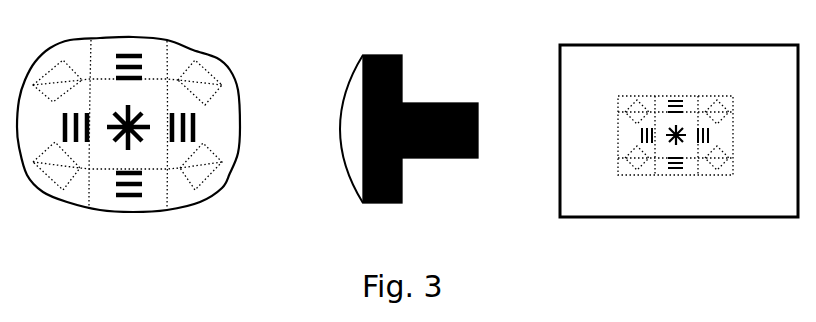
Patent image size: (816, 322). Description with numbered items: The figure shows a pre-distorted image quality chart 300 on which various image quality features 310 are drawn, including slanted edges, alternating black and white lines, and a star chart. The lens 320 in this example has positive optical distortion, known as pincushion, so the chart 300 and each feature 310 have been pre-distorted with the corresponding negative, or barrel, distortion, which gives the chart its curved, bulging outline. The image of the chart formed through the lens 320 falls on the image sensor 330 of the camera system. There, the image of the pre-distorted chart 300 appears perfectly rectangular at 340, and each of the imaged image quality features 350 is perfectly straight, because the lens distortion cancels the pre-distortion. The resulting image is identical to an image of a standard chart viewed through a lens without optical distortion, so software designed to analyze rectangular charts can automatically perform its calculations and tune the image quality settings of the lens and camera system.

The pre-distorted image quality chart 300 is at (128, 117).
The image quality features 310 is at (198, 175).
The lens 320 is at (409, 129).
The image sensor 330 is at (679, 122).
The rectangular image of the pre-distorted chart 340 is at (675, 125).
The imaged image quality features 350 is at (715, 157).